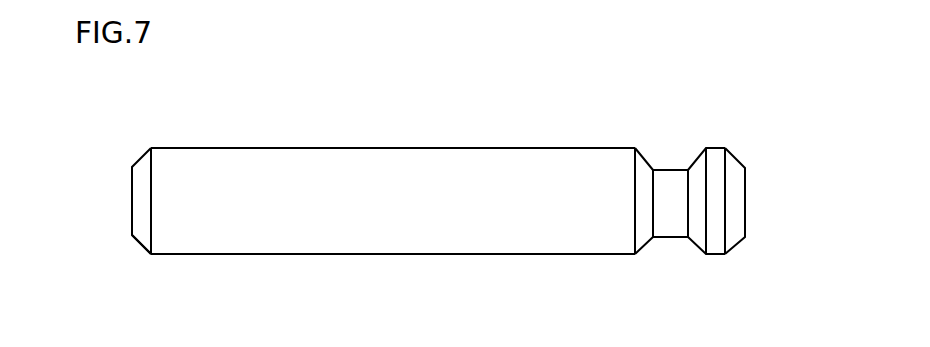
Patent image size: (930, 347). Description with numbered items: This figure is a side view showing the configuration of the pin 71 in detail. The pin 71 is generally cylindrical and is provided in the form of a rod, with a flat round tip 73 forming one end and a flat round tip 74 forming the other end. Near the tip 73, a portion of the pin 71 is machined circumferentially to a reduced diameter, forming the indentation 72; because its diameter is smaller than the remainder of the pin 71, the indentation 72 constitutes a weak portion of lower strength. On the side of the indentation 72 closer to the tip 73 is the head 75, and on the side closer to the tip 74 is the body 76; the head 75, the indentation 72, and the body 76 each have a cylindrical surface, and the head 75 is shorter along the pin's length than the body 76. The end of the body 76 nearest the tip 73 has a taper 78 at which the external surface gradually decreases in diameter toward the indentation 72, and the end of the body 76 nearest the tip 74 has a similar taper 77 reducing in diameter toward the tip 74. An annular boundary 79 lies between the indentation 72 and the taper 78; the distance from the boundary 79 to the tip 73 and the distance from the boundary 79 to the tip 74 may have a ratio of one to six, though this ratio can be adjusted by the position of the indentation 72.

The pin 71 is at (545, 91).
The indentation 72 is at (671, 218).
The tip 73 is at (745, 197).
The tip 74 is at (132, 197).
The head 75 is at (717, 238).
The body 76 is at (370, 227).
The taper 77 is at (133, 247).
The taper 78 is at (650, 243).
The annular boundary 79 is at (653, 190).